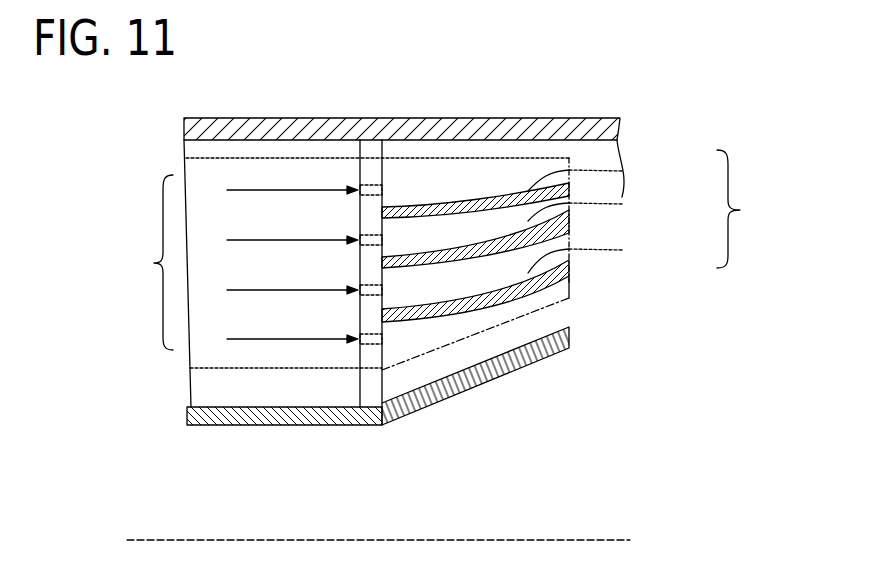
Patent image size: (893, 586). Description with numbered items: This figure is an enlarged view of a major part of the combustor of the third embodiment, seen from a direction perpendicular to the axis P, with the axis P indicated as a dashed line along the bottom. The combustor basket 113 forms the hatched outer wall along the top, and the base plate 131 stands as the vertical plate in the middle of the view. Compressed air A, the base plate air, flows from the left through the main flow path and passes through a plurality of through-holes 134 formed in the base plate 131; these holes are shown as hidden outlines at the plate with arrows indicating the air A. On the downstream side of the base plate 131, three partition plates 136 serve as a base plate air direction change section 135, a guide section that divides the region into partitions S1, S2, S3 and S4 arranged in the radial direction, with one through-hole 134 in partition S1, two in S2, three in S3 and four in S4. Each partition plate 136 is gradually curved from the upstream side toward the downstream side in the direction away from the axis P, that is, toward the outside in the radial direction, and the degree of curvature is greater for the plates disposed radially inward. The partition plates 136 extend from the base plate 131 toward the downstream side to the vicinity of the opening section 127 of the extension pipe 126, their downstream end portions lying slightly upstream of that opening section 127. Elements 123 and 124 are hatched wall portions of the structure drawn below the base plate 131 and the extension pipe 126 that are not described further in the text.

The combustor basket 113 is at (413, 130).
The bottom wall of housing 123 is at (262, 413).
The inclined bottom wall 124 is at (442, 392).
The extension pipe 126 is at (560, 300).
The opening section 127 is at (570, 278).
The base plate 131 is at (367, 378).
The through-holes 134 is at (365, 196).
The base plate air direction change section 135 is at (754, 209).
The partition plates 136 is at (622, 171).
The compressed air A is at (243, 262).
The axis P is at (170, 540).
The partition S1 is at (383, 355).
The partition S2 is at (383, 302).
The partition S3 is at (383, 250).
The partition S4 is at (383, 198).